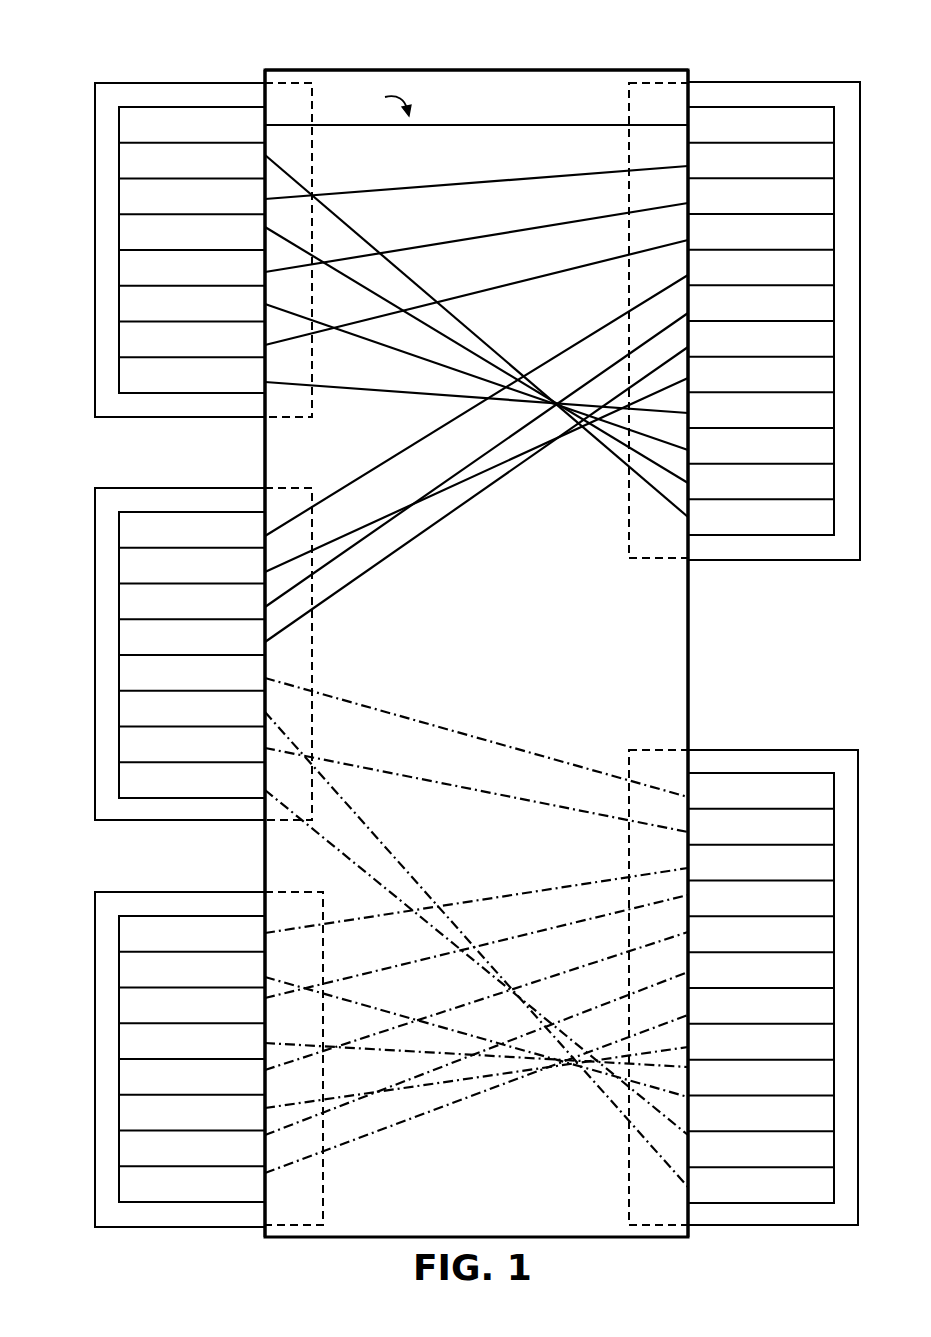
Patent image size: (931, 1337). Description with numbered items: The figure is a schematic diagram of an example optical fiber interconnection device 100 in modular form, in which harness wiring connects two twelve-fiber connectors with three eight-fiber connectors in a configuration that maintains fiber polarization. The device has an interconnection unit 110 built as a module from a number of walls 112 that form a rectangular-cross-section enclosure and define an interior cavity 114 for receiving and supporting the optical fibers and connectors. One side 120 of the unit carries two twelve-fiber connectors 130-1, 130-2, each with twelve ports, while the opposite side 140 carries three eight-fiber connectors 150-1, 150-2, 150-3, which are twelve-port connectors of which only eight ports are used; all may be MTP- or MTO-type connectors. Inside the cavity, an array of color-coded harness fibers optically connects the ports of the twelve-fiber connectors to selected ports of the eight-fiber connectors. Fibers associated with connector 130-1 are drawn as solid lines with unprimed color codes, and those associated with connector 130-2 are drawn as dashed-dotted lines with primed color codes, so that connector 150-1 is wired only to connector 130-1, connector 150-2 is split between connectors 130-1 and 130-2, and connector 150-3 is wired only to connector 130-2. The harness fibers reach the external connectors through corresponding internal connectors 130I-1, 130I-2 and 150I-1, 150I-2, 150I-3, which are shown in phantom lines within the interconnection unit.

The interconnection device 100 is at (247, 42).
The interconnection unit 110 is at (450, 66).
The wall 112 is at (600, 70).
The interior cavity 114 is at (501, 623).
The side 120 is at (688, 620).
The opposite side 140 is at (265, 856).
The 12f connector 130-1 is at (746, 82).
The 12f connector 130-2 is at (746, 750).
The internal connector 130I-1 is at (629, 156).
The internal connector 130I-2 is at (628, 1183).
The 8f connector 150-1 is at (150, 83).
The 8f connector 150-2 is at (141, 488).
The 8f connector 150-3 is at (129, 892).
The internal connector 150I-1 is at (313, 140).
The internal connector 150I-2 is at (312, 680).
The internal connector 150I-3 is at (323, 1172).